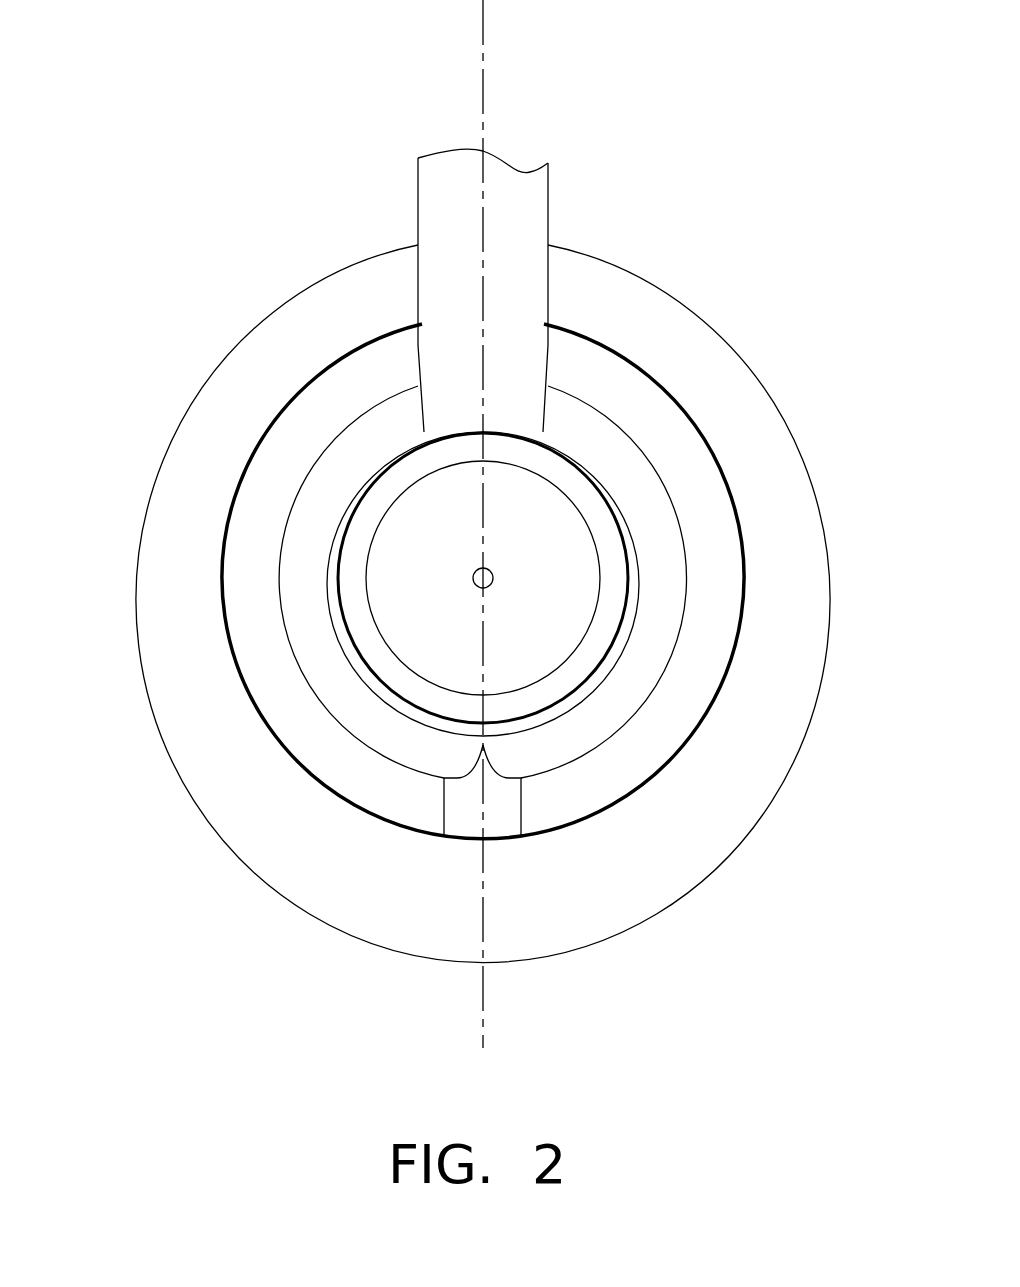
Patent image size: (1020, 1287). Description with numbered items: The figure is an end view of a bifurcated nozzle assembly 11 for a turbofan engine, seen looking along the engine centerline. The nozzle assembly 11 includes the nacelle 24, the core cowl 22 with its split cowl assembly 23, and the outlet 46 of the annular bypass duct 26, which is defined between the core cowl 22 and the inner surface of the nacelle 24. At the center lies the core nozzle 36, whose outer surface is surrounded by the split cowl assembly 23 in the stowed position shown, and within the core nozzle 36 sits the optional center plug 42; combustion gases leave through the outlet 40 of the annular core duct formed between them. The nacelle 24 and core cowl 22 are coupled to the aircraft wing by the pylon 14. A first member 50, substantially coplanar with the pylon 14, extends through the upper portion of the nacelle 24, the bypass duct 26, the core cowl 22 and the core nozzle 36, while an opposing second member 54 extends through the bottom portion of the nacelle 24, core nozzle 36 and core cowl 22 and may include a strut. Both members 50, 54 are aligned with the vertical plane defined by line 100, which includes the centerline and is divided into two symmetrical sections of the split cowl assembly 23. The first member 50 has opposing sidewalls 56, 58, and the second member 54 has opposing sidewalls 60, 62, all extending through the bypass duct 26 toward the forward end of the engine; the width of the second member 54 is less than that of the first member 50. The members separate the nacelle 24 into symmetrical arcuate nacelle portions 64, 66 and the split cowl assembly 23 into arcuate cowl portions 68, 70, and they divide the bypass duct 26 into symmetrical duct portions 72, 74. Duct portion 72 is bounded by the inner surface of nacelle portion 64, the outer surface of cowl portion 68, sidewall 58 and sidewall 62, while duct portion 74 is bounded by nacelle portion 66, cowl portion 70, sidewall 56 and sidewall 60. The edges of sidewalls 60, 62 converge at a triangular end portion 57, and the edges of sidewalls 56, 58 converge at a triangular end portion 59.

The line defining vertical plane 100 is at (504, 54).
The nozzle assembly 11 is at (163, 118).
The pylon 14 is at (527, 180).
The first member 50 is at (470, 247).
The end portion 59 is at (500, 280).
The sidewall 56 is at (402, 352).
The sidewall 58 is at (566, 352).
The nacelle 24 is at (742, 401).
The duct portion 74 is at (274, 468).
The core cowl 22 is at (629, 464).
The duct portion 72 is at (716, 507).
The split cowl assembly 23 is at (664, 519).
The arcuate cowl portion 70 is at (303, 558).
The arcuate cowl portion 68 is at (663, 556).
The outlet 46 is at (269, 612).
The center plug 42 is at (557, 587).
The core nozzle 36 is at (369, 643).
The annular bypass duct 26 is at (279, 666).
The arcuate nacelle portion 64 is at (788, 667).
The arcuate nacelle portion 66 is at (175, 707).
The outlet 40 is at (578, 672).
The sidewall 60 is at (423, 807).
The sidewall 62 is at (543, 807).
The second member 54 is at (472, 823).
The end portion 57 is at (494, 817).